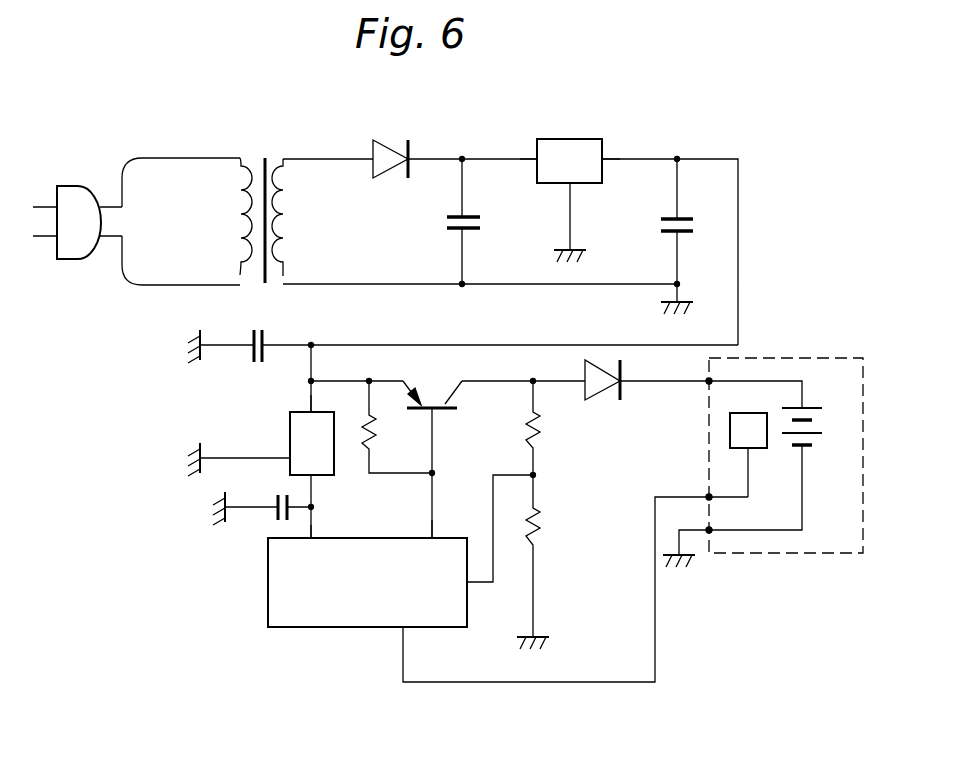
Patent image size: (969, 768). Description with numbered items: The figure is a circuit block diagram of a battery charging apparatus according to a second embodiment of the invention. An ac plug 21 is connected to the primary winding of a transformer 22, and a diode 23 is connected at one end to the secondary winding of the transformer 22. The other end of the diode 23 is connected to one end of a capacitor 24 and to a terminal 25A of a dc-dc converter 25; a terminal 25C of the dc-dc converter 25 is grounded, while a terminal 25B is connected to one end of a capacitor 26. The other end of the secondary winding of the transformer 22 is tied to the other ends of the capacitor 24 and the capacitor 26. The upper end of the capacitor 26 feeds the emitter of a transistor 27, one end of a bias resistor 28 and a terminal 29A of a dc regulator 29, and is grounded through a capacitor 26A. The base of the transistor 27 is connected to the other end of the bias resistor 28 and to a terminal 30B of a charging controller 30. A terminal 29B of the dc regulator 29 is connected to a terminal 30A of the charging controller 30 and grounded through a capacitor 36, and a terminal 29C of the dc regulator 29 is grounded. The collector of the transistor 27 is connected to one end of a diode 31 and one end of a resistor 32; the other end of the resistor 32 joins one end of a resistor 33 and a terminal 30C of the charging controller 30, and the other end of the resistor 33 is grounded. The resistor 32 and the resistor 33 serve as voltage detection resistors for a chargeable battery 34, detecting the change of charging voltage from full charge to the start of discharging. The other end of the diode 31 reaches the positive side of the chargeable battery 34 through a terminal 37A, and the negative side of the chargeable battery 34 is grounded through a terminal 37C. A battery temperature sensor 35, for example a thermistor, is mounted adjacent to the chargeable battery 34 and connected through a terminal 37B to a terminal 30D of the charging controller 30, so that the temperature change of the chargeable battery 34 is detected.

The ac plug 21 is at (80, 185).
The transformer 22 is at (267, 153).
The diode 23 is at (395, 141).
The capacitor 24 is at (447, 224).
The dc-dc converter 25 is at (605, 147).
The terminal 25A is at (537, 158).
The terminal 25B is at (603, 163).
The terminal 25C is at (566, 192).
The capacitor 26 is at (688, 233).
The capacitor 26A is at (265, 340).
The transistor 27 is at (432, 404).
The bias resistor 28 is at (372, 432).
The dc regulator 29 is at (290, 433).
The terminal 29A is at (311, 410).
The terminal 29B is at (313, 478).
The terminal 29C is at (290, 463).
The charging controller 30 is at (268, 603).
The terminal 30A is at (311, 538).
The terminal 30B is at (432, 535).
The terminal 30C is at (470, 588).
The terminal 30D is at (400, 632).
The diode 31 is at (595, 399).
The resistor 32 is at (540, 440).
The resistor 33 is at (546, 530).
The chargeable battery 34 is at (810, 407).
The battery temperature sensor 35 is at (730, 430).
The capacitor 36 is at (275, 513).
The terminal 37A is at (712, 380).
The terminal 37B is at (709, 497).
The terminal 37C is at (712, 533).